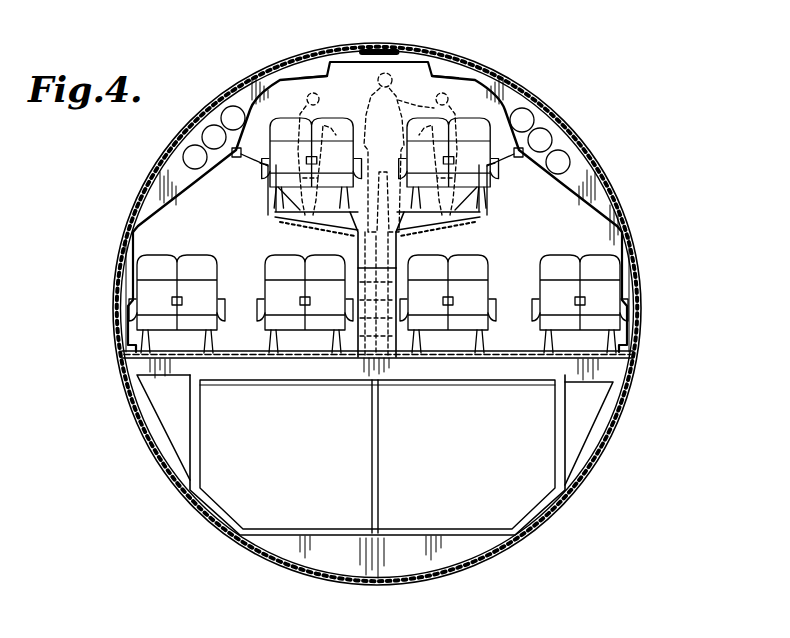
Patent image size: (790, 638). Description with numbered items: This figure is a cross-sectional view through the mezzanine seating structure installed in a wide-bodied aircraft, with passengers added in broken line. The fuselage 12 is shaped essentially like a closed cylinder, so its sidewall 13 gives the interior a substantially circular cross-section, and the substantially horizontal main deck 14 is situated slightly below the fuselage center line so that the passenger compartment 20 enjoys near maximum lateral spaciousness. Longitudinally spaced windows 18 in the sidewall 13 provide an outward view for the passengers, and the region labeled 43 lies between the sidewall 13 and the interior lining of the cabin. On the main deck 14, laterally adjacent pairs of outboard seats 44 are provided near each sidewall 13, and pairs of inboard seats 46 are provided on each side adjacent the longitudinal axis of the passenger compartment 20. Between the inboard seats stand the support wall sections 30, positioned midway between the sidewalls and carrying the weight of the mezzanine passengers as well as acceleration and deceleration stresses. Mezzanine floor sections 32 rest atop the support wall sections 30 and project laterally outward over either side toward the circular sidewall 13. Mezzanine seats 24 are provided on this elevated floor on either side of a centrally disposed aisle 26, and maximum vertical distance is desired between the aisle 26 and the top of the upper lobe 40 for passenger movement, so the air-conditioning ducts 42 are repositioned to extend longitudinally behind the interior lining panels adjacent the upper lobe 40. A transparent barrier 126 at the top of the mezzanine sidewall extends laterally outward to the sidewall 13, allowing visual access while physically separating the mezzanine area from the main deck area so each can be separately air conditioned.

The fuselage 12 is at (118, 370).
The sidewall 13 is at (145, 238).
The main deck 14 is at (246, 351).
The windows 18 is at (117, 260).
The passenger compartment 20 is at (567, 217).
The mezzanine seats 24 is at (478, 124).
The aisle 26 is at (365, 228).
The support wall sections 30 is at (356, 340).
The mezzanine floor sections 32 is at (415, 228).
The upper lobe 40 is at (356, 66).
The air-conditioning ducts 42 is at (561, 149).
The insulation 43 is at (248, 86).
The outboard seats 44 is at (150, 288).
The inboard seats 46 is at (277, 268).
The transparent barrier 126 is at (240, 160).